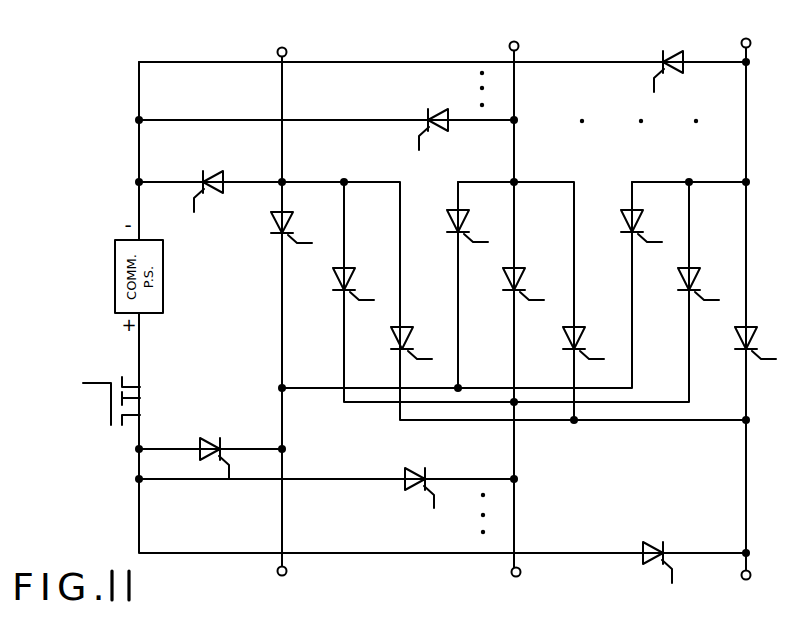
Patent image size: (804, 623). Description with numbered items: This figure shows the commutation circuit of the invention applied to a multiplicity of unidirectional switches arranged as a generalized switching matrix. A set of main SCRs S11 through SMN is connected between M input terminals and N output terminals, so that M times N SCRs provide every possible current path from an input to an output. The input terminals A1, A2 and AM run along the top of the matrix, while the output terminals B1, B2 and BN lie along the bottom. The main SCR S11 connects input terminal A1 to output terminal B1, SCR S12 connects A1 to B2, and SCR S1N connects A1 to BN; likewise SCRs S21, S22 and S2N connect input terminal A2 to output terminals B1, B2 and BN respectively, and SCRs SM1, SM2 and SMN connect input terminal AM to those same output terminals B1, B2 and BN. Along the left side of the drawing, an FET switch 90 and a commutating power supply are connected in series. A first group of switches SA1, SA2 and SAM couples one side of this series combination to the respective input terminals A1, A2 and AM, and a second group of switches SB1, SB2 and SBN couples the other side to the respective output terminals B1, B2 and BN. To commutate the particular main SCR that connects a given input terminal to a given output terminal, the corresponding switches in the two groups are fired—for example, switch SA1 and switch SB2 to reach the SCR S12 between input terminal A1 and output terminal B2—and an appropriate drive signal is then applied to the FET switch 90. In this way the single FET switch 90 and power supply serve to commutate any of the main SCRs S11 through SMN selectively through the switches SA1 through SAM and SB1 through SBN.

The FET switch 90 is at (157, 392).
The input terminal A1 is at (281, 42).
The input terminal A2 is at (513, 35).
The input terminal AM is at (745, 33).
The output terminal B1 is at (298, 571).
The output terminal B2 is at (532, 571).
The output terminal BN is at (762, 573).
The switch SA1 is at (212, 181).
The switch SA2 is at (436, 118).
The switch SAM is at (674, 60).
The switch SB1 is at (210, 448).
The switch SB2 is at (418, 476).
The switch SBN is at (652, 550).
The main SCR S11 is at (274, 227).
The main SCR S12 is at (339, 293).
The main SCR S1N is at (395, 349).
The main SCR S21 is at (476, 222).
The main SCR S22 is at (533, 281).
The main SCR S2N is at (592, 341).
The main SCR SM1 is at (650, 222).
The main SCR SM2 is at (707, 281).
The main SCR SMN is at (765, 341).